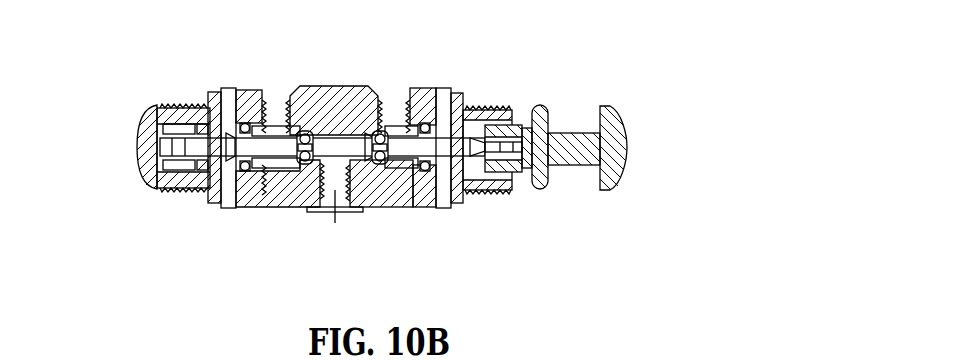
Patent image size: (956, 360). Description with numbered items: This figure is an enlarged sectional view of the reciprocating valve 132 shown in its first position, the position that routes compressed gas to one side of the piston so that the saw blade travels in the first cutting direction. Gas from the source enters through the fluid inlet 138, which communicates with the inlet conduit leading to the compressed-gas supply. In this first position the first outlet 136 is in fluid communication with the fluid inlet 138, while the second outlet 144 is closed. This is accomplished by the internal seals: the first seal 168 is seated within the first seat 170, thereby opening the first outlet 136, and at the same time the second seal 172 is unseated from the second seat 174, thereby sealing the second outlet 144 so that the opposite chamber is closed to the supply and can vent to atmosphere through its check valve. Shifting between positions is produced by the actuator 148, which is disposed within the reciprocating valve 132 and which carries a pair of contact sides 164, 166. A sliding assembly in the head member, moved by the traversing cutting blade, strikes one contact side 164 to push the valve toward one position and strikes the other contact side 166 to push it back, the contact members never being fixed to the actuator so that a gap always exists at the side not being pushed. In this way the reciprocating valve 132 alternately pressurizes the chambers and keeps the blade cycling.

The reciprocating valve 132 is at (319, 57).
The first outlet 136 is at (398, 90).
The fluid inlet 138 is at (393, 72).
The second outlet 144 is at (270, 88).
The actuator 148 is at (621, 191).
The contact side 164 is at (606, 190).
The contact side 166 is at (140, 167).
The first seal 168 is at (368, 190).
The first seat 170 is at (422, 172).
The second seal 172 is at (307, 160).
The second seat 174 is at (297, 150).